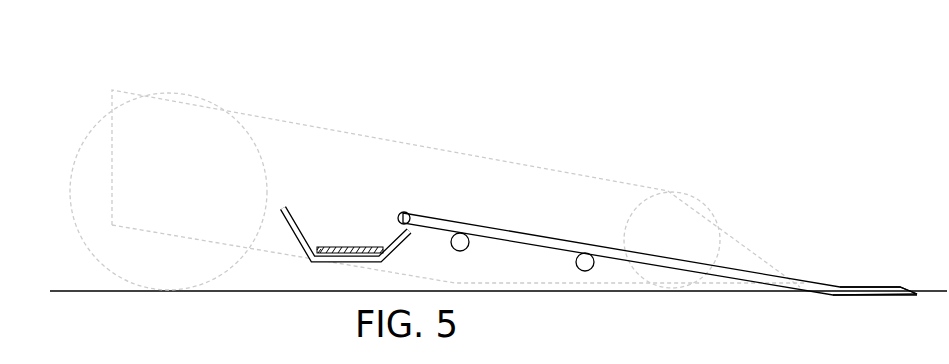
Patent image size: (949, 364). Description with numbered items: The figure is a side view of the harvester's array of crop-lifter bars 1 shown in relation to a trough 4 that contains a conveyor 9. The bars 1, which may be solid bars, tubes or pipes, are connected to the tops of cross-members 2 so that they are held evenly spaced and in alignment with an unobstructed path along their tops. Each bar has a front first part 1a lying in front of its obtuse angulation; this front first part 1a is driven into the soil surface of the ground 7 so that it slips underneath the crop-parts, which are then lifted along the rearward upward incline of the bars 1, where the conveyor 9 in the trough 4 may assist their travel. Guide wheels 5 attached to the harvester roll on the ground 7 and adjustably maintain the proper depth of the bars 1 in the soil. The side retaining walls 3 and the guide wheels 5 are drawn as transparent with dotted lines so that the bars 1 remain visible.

The crop-lifter bars 1 is at (873, 288).
The front first part 1a is at (896, 287).
The cross-members 2 is at (403, 212).
The side retaining walls 3 is at (274, 138).
The trough 4 is at (303, 230).
The guide wheels 5 is at (177, 97).
The ground 7 is at (62, 291).
The conveyor 9 is at (363, 247).